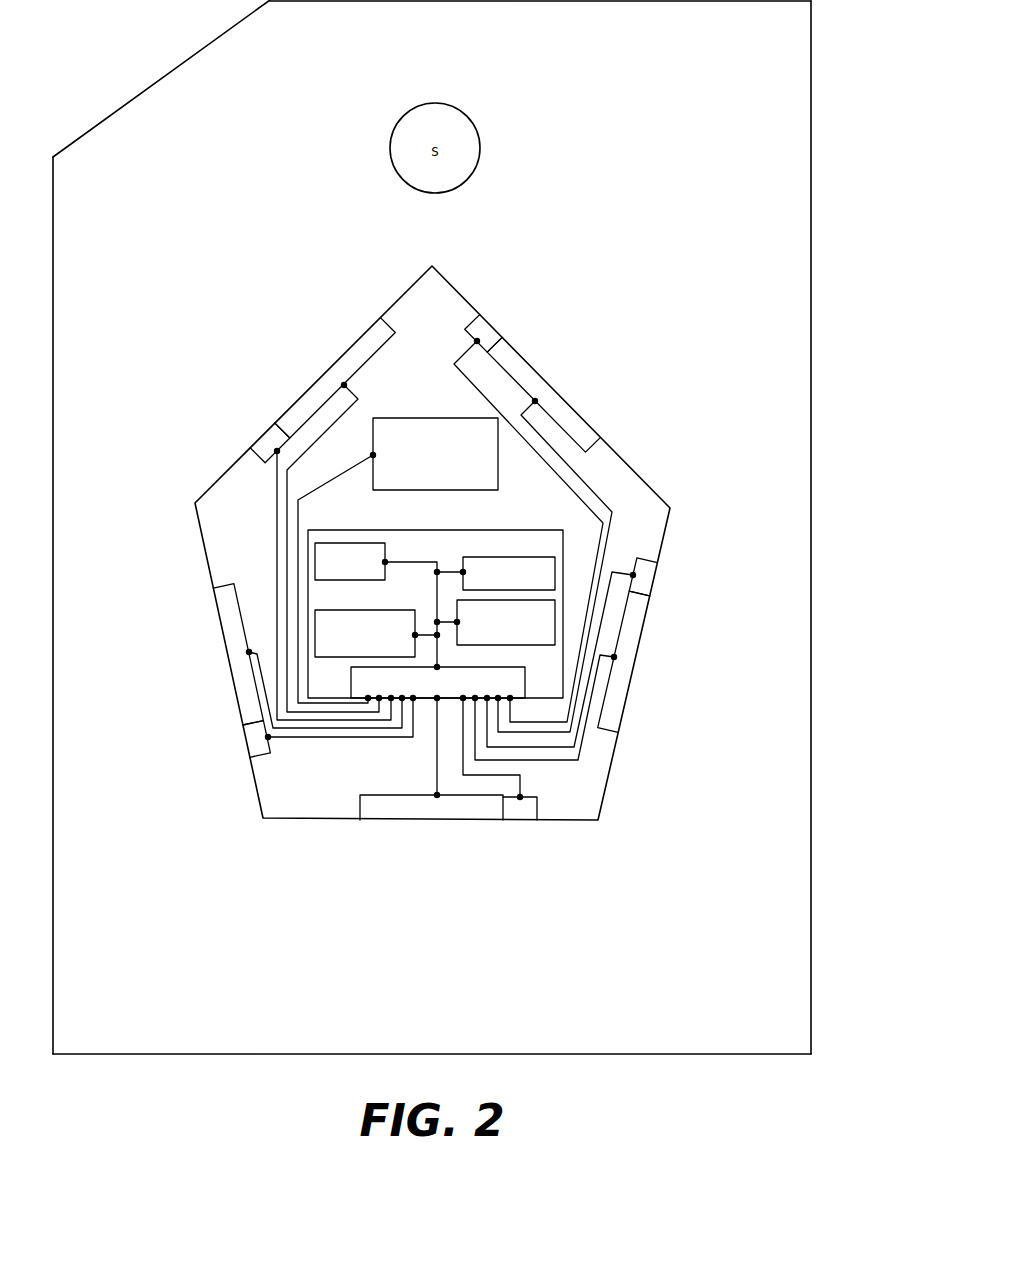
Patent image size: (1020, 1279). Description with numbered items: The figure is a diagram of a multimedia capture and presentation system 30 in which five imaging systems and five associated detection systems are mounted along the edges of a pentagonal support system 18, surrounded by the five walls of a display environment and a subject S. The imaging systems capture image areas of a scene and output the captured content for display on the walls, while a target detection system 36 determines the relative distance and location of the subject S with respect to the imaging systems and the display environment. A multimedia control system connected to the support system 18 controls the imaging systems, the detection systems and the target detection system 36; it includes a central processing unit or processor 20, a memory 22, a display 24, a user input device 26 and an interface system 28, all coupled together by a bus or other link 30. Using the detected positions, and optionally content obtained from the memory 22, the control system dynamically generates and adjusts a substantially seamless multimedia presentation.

The support system 18 is at (595, 786).
The central processing unit (CPU) or processor 20 is at (352, 550).
The memory 22 is at (328, 620).
The display 24 is at (545, 560).
The user input device 26 is at (538, 638).
The interface system 28 is at (365, 683).
The multimedia capture and presentation system 30 is at (250, 290).
The target detection system 36 is at (398, 425).